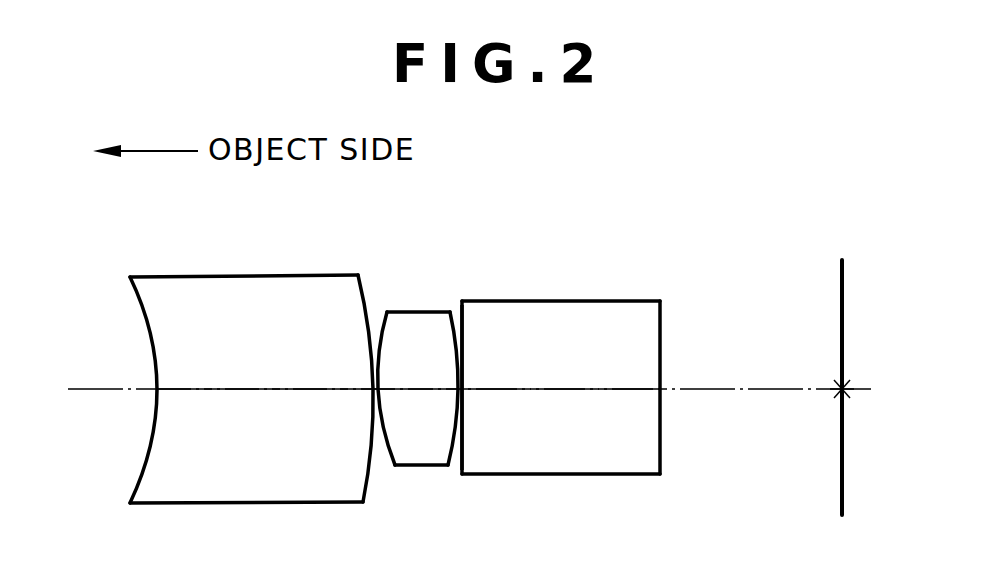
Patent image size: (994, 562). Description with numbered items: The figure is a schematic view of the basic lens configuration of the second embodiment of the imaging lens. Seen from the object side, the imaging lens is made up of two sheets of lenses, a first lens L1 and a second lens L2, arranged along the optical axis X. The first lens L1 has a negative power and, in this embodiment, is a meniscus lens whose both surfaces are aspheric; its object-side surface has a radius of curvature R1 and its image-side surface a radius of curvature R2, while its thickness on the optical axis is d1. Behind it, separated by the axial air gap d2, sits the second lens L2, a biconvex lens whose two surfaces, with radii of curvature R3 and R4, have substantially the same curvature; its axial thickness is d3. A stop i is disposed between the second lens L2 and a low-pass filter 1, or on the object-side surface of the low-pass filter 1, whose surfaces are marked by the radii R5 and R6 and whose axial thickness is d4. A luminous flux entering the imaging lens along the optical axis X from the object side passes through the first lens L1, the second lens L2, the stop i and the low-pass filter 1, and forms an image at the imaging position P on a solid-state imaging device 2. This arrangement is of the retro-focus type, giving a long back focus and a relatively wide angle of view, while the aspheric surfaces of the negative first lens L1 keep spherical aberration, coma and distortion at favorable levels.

The first lens L1 is at (223, 354).
The second lens L2 is at (418, 337).
The radius of curvature of the object-side surface of the first lens R1 is at (138, 297).
The radius of curvature of the image-side surface of the first lens R2 is at (371, 273).
The radius of curvature of the object-side surface of the second lens R3 is at (379, 318).
The radius of curvature of the image-side surface of the second lens R4 is at (440, 315).
The radius of curvature of the object-side surface of the low-pass filter R5 is at (460, 317).
The radius of curvature of the image-side surface of the low-pass filter R6 is at (660, 315).
The low-pass filter 1 is at (590, 347).
The solid-state imaging device 2 is at (840, 278).
The imaging position P is at (842, 385).
The optical axis X is at (103, 393).
The thickness of the first lens on the optical axis d1 is at (242, 387).
The air gap between the first and second lenses on the optical axis d2 is at (372, 383).
The thickness of the second lens on the optical axis d3 is at (425, 387).
The thickness of the low-pass filter on the optical axis d4 is at (567, 385).
The stop i is at (460, 470).